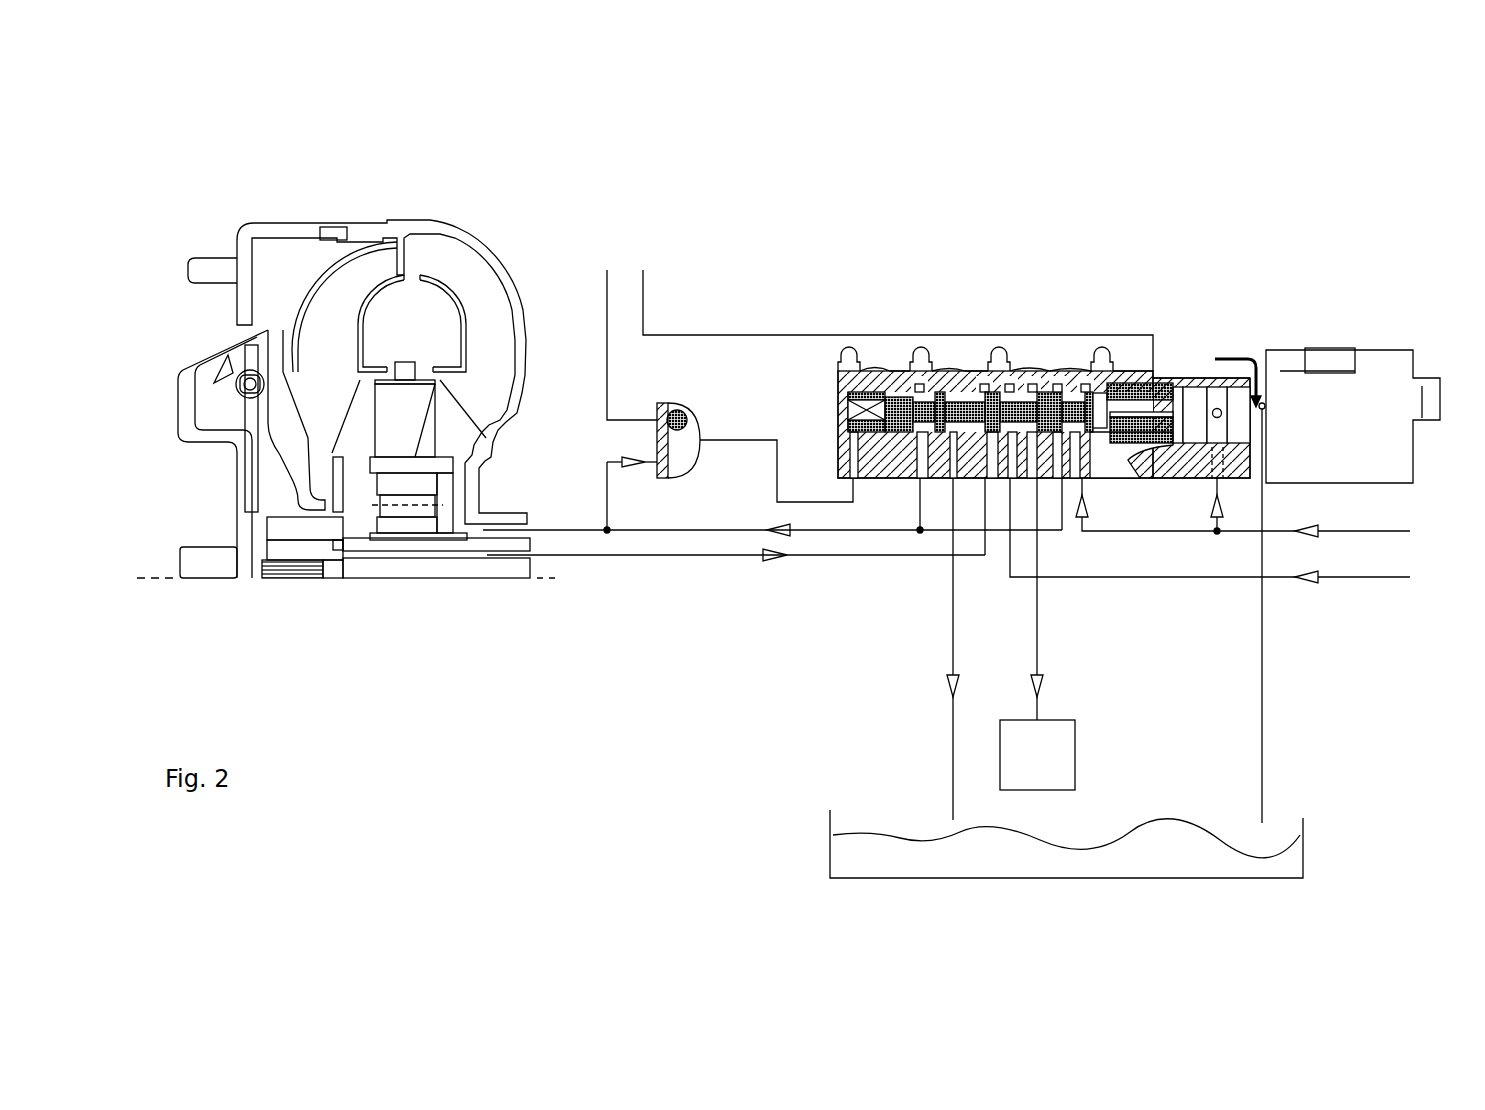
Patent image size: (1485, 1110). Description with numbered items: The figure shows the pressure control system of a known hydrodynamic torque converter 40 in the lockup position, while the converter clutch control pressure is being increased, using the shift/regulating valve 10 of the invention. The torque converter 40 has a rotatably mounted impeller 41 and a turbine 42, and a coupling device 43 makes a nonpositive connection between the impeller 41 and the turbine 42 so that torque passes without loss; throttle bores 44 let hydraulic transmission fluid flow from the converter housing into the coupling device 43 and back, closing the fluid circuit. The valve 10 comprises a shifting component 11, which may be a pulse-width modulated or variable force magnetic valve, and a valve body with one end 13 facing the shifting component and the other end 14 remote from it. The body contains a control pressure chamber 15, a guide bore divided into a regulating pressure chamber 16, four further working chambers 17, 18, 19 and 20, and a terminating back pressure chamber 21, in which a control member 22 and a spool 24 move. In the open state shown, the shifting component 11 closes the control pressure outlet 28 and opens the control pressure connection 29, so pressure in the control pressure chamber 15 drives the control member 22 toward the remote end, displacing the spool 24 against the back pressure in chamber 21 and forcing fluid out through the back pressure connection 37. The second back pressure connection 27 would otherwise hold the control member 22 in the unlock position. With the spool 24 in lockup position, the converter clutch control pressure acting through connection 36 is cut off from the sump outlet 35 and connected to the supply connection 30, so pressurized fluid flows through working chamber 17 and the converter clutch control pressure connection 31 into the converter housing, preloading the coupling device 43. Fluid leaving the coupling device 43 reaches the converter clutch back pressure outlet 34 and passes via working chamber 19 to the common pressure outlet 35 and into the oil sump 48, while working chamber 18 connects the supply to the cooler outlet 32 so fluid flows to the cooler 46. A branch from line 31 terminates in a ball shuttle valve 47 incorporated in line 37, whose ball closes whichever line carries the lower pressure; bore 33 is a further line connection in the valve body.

The shift/regulating valve 10 is at (1222, 331).
The shifting component 11 is at (1328, 417).
The end facing the shifting component 13 is at (1263, 403).
The end remote from the shifting component 14 is at (830, 411).
The control pressure chamber 15 is at (1198, 400).
The regulating pressure chamber 16 is at (1100, 399).
The working chamber 17 is at (1072, 398).
The working chamber 18 is at (1023, 397).
The working chamber 19 is at (958, 397).
The working chamber 20 is at (927, 397).
The back pressure chamber 21 is at (850, 386).
The control member 22 is at (1130, 399).
The spool 24 is at (905, 413).
The second back pressure connection 27 is at (908, 308).
The control pressure outlet 28 is at (1241, 616).
The control pressure connection 29 is at (1200, 490).
The supply connection 30 is at (1280, 514).
The converter clutch control pressure connection 31 is at (772, 507).
The cooler outlet 32 is at (1019, 599).
The bore 33 is at (1226, 536).
The converter clutch back pressure outlet 34 is at (736, 519).
The common pressure outlet 35 is at (932, 649).
The connection 36 is at (904, 505).
The back pressure connection 37 is at (722, 389).
The hydrodynamic torque converter 40 is at (460, 219).
The impeller 41 is at (476, 279).
The turbine 42 is at (345, 287).
The coupling device 43 is at (250, 409).
The throttle bores 44 is at (250, 334).
The cooler 46 is at (1037, 755).
The ball shuttle valve 47 is at (664, 403).
The oil sump 48 is at (1066, 844).